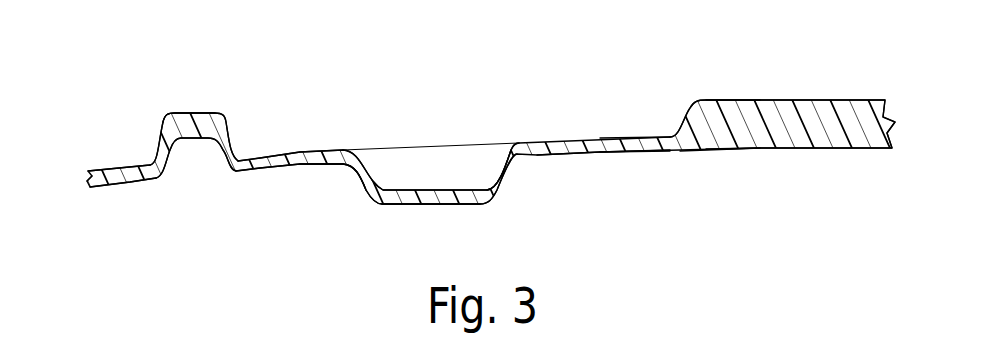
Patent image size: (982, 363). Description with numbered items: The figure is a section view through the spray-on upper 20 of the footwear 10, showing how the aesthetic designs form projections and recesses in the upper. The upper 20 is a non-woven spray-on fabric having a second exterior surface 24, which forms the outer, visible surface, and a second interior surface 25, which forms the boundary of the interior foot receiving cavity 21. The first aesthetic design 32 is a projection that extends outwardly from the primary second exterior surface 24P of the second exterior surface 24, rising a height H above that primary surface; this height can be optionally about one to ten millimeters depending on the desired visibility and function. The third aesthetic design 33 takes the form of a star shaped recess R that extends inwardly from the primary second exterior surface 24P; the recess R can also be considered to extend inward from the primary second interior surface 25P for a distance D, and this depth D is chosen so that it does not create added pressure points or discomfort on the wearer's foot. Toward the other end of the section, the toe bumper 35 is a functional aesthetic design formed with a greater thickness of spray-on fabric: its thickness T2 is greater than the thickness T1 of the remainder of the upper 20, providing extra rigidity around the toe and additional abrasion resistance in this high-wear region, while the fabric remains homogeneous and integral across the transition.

The footwear 10 is at (108, 90).
The spray-on upper 20 is at (58, 167).
The interior foot receiving cavity 21 is at (351, 239).
The second exterior surface 24 is at (341, 151).
The primary second exterior surface 24P is at (255, 157).
The second interior surface 25 is at (298, 172).
The primary second interior surface 25P is at (577, 155).
The first aesthetic design 32 is at (185, 113).
The third aesthetic design 33 is at (401, 205).
The toe bumper 35 is at (772, 99).
The height H is at (144, 217).
The distance D is at (537, 102).
The recess R is at (476, 173).
The thickness T1 is at (652, 202).
The thickness T2 is at (724, 202).